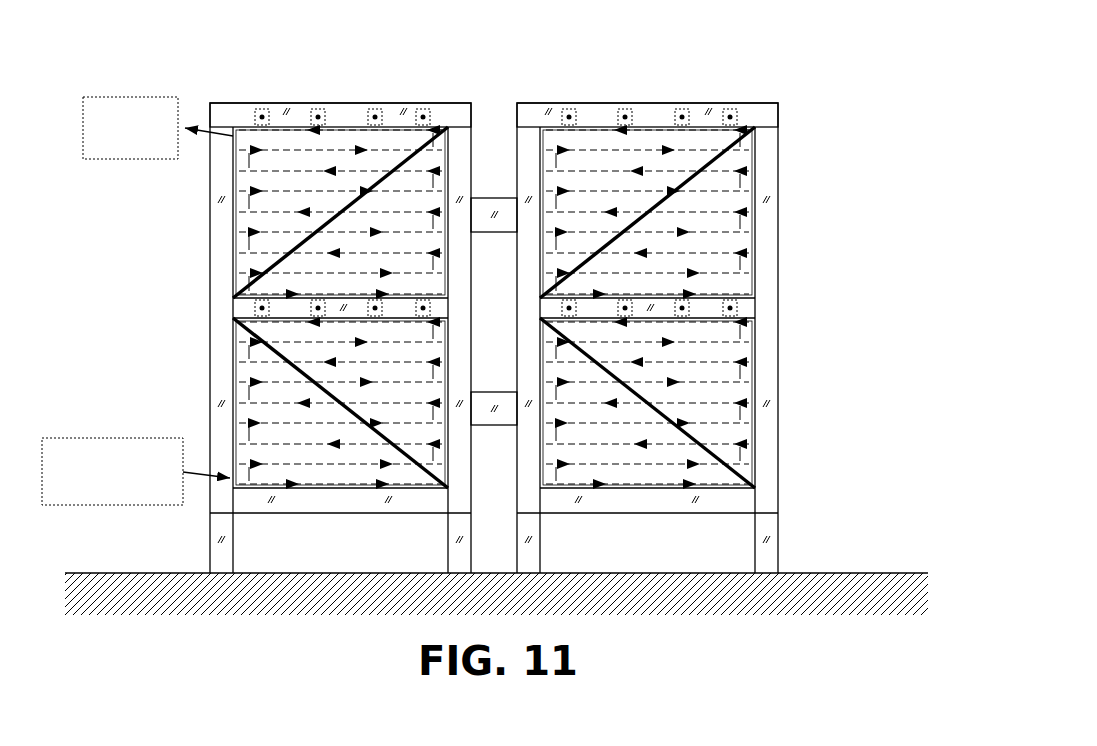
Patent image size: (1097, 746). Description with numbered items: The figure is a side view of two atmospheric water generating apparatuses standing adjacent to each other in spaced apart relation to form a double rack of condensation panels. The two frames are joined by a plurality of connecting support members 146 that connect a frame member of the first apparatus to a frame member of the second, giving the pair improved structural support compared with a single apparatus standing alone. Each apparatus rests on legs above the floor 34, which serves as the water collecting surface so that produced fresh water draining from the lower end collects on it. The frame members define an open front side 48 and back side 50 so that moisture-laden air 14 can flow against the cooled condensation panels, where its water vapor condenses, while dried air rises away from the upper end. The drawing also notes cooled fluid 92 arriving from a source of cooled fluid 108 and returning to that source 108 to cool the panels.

The moisture-laden air 14 is at (172, 295).
The floor 34 is at (877, 572).
The front side 48 is at (180, 338).
The back side 50 is at (793, 428).
The cooled fluid 92 is at (136, 471).
The source of cooled fluid 108 is at (158, 128).
The connecting support member 146 is at (488, 208).